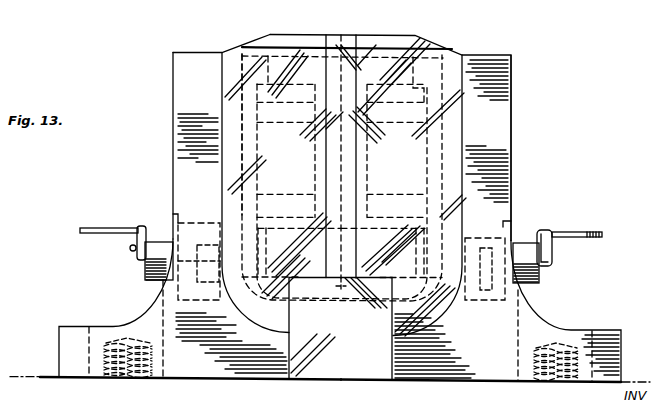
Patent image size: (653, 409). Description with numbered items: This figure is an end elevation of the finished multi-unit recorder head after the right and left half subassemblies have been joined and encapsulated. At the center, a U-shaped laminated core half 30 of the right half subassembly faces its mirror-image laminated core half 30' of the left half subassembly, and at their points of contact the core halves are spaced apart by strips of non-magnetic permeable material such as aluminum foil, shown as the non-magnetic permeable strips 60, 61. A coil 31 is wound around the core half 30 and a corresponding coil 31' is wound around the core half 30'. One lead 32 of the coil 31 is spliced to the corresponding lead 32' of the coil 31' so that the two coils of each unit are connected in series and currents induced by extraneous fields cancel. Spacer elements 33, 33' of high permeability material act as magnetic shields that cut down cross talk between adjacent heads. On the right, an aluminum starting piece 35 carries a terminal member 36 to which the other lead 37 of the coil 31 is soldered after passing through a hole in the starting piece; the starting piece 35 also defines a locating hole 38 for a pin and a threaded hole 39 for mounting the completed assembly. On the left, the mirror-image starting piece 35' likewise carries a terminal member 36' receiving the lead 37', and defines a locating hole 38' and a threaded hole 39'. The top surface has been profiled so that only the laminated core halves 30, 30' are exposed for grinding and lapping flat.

The laminated core half 30 is at (376, 173).
The laminated core half 30' is at (267, 172).
The coil 31 is at (417, 167).
The coil 31' is at (264, 166).
The lead 32 is at (366, 329).
The lead 32' is at (315, 329).
The spacer element 33 is at (362, 178).
The spacer element 33' is at (232, 113).
The starting piece 35 is at (469, 217).
The starting piece 35' is at (210, 213).
The terminal member 36 is at (569, 236).
The terminal member 36' is at (111, 231).
The lead 37 is at (524, 260).
The lead 37' is at (162, 257).
The hole 38 is at (497, 312).
The hole 38' is at (175, 309).
The threaded hole 39 is at (564, 345).
The threaded hole 39' is at (128, 372).
The non-magnetic permeable strip 60 is at (345, 42).
The non-magnetic permeable strip 61 is at (337, 287).